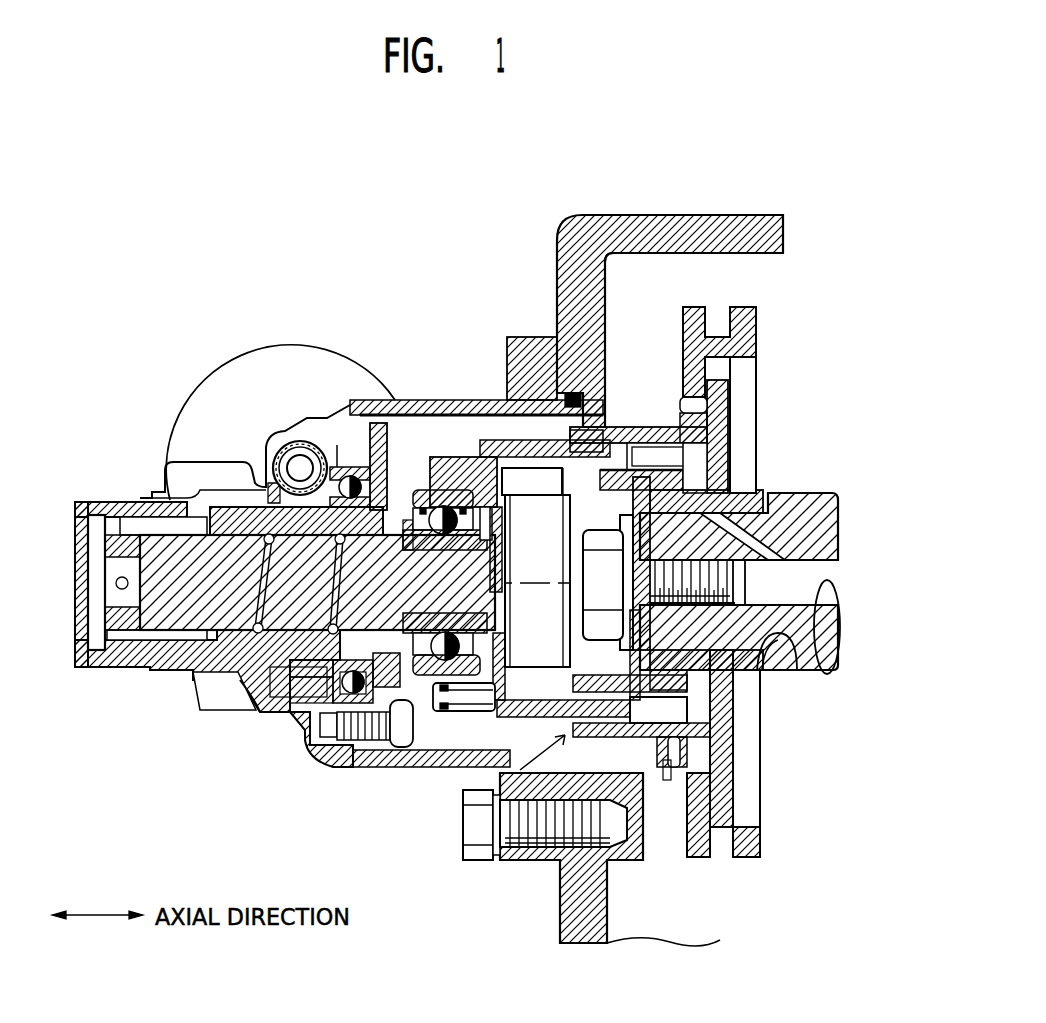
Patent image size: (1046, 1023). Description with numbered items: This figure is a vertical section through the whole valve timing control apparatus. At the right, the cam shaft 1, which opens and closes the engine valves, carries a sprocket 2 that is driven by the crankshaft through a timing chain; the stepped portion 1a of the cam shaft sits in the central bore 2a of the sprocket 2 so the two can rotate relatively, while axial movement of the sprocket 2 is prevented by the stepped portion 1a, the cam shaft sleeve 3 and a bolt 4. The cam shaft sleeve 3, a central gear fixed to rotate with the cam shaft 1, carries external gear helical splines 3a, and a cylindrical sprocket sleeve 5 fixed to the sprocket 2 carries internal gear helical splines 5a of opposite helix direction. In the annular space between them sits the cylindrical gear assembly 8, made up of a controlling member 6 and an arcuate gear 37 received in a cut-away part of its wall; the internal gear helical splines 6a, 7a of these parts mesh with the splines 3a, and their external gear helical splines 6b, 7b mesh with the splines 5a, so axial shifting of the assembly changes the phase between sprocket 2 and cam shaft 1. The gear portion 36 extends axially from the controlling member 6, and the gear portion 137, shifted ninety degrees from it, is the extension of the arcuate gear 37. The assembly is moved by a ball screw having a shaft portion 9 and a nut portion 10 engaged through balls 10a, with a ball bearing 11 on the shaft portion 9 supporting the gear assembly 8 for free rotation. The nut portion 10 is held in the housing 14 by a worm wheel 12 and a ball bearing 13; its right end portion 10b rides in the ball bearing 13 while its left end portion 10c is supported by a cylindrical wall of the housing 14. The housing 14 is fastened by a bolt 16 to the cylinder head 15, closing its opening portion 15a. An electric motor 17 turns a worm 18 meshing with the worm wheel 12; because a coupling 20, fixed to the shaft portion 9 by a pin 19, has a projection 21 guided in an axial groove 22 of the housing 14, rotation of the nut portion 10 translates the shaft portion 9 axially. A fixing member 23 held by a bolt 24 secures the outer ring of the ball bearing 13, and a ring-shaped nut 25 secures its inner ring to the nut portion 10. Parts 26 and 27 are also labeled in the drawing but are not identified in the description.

The cam shaft 1 is at (822, 527).
The stepped portion 1a is at (745, 700).
The sprocket 2 is at (756, 395).
The bore 2a is at (778, 675).
The cam shaft sleeve 3 is at (660, 497).
The external gear helical splines 3a is at (700, 472).
The bolt 4 is at (728, 430).
The sprocket sleeve 5 is at (728, 750).
The internal gear helical splines 5a is at (628, 425).
The controlling member 6 is at (433, 470).
The internal gear helical splines 6a is at (498, 440).
The external gear helical splines 6b is at (466, 468).
The internal gear helical splines 7a is at (470, 830).
The external gear helical splines 7b is at (455, 693).
The cylindrical gear assembly 8 is at (545, 793).
The shaft portion 9 is at (152, 545).
The nut portion 10 is at (240, 468).
The balls 10a is at (241, 650).
The right end portion 10b is at (348, 465).
The left end portion 10c is at (215, 690).
The ball bearing 11 is at (383, 480).
The worm wheel 12 is at (228, 478).
The ball bearing 13 is at (340, 740).
The housing 14 is at (125, 660).
The cylinder head 15 is at (562, 248).
The opening portion 15a is at (588, 268).
The bolt 16 is at (545, 847).
The electric motor 17 is at (250, 345).
The worm 18 is at (276, 440).
The pin 19 is at (102, 583).
The coupling 20 is at (107, 622).
The projection 21 is at (93, 525).
The axial groove 22 is at (185, 520).
The fixing member 23 is at (338, 712).
The bolt 24 is at (335, 695).
The ring-shaped nut 25 is at (358, 478).
The plug 26 is at (423, 712).
The screw 27 is at (390, 745).
The gear portion 36 is at (572, 398).
The arcuate gear 37 is at (523, 697).
The gear portion 137 is at (660, 770).